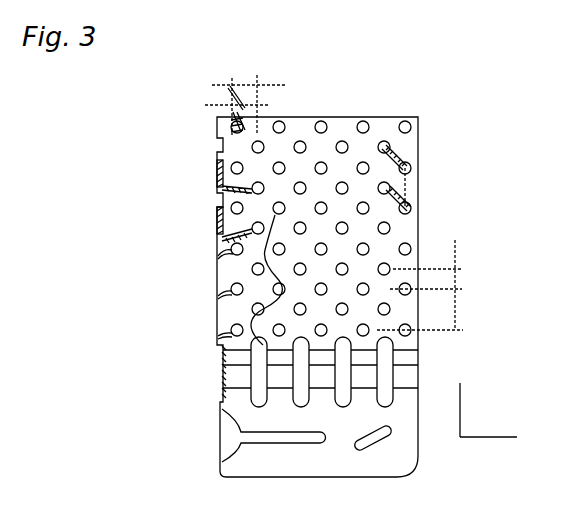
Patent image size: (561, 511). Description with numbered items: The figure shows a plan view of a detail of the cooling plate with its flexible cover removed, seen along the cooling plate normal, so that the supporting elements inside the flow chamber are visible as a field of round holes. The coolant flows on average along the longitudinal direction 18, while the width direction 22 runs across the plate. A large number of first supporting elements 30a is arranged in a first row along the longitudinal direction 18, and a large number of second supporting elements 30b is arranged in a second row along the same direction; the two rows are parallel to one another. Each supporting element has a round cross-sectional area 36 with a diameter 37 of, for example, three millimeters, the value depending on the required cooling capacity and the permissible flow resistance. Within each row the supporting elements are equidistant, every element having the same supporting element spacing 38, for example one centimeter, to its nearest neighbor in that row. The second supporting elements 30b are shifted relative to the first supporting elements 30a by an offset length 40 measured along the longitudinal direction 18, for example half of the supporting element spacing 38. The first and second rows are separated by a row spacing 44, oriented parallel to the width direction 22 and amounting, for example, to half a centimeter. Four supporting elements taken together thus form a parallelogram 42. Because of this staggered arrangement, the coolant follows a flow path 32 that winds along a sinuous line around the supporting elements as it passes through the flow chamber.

The longitudinal direction 18 is at (462, 405).
The width direction 22 is at (482, 440).
The first supporting elements 30a is at (217, 165).
The second supporting elements 30b is at (222, 188).
The flow path 32 is at (228, 304).
The cross-sectional area 36 is at (222, 268).
The diameter 37 is at (228, 91).
The supporting element spacing 38 is at (458, 309).
The offset length 40 is at (455, 268).
The parallelogram 42 is at (405, 183).
The row spacing 44 is at (248, 83).